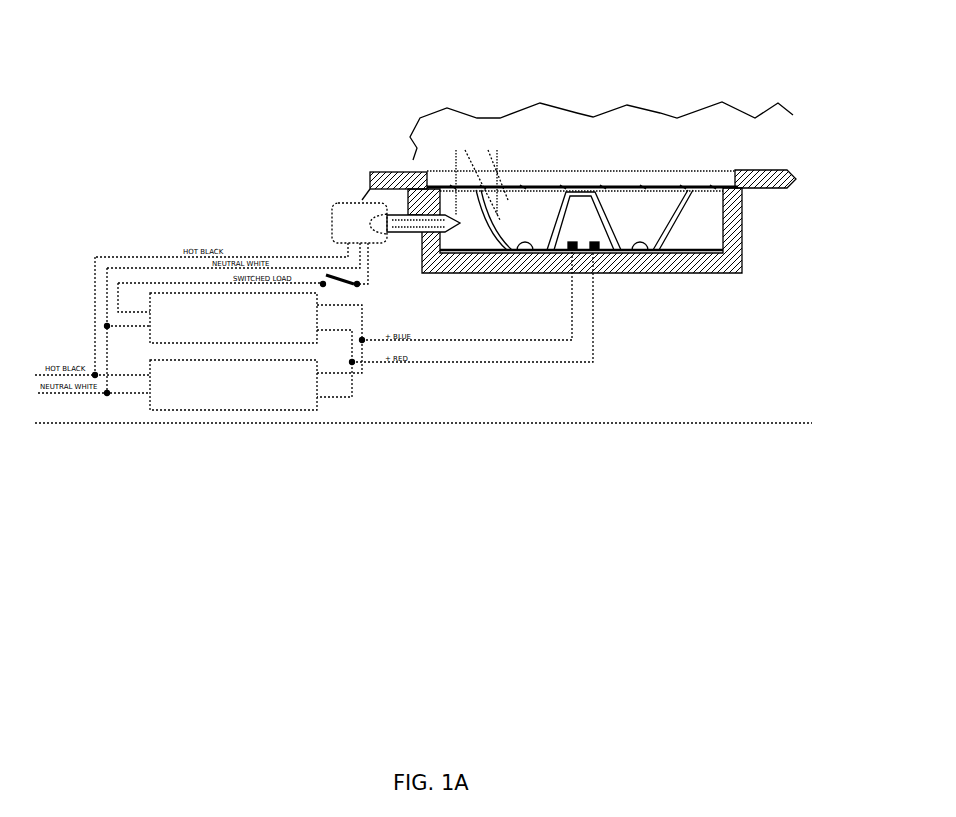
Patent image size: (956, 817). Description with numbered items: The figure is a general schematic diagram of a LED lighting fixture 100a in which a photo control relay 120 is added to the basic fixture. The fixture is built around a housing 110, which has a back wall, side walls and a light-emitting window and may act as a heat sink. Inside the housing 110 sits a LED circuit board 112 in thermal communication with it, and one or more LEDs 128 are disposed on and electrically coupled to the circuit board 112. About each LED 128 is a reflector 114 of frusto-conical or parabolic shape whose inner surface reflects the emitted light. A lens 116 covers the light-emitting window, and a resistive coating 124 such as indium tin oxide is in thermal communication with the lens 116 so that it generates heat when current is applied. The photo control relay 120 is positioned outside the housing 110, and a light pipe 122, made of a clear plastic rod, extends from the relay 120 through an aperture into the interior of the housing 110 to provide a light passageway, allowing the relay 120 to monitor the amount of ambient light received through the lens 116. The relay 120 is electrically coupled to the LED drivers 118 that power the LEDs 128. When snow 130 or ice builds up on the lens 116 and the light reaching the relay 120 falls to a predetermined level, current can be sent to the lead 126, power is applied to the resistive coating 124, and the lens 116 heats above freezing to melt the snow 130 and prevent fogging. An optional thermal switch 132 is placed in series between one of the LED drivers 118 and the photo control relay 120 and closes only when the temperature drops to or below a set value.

The lighting fixture 100a is at (780, 69).
The housing 110 is at (730, 265).
The LED circuit board 112 is at (760, 334).
The reflector 114 is at (752, 295).
The lens 116 is at (728, 175).
The LED driver 118 is at (267, 333).
The photo control relay 120 is at (368, 202).
The light pipe 122 is at (475, 293).
The resistive coating 124 is at (718, 188).
The lead 126 is at (414, 164).
The LED 128 is at (527, 242).
The snow 130 is at (444, 106).
The thermal switch 132 is at (360, 288).